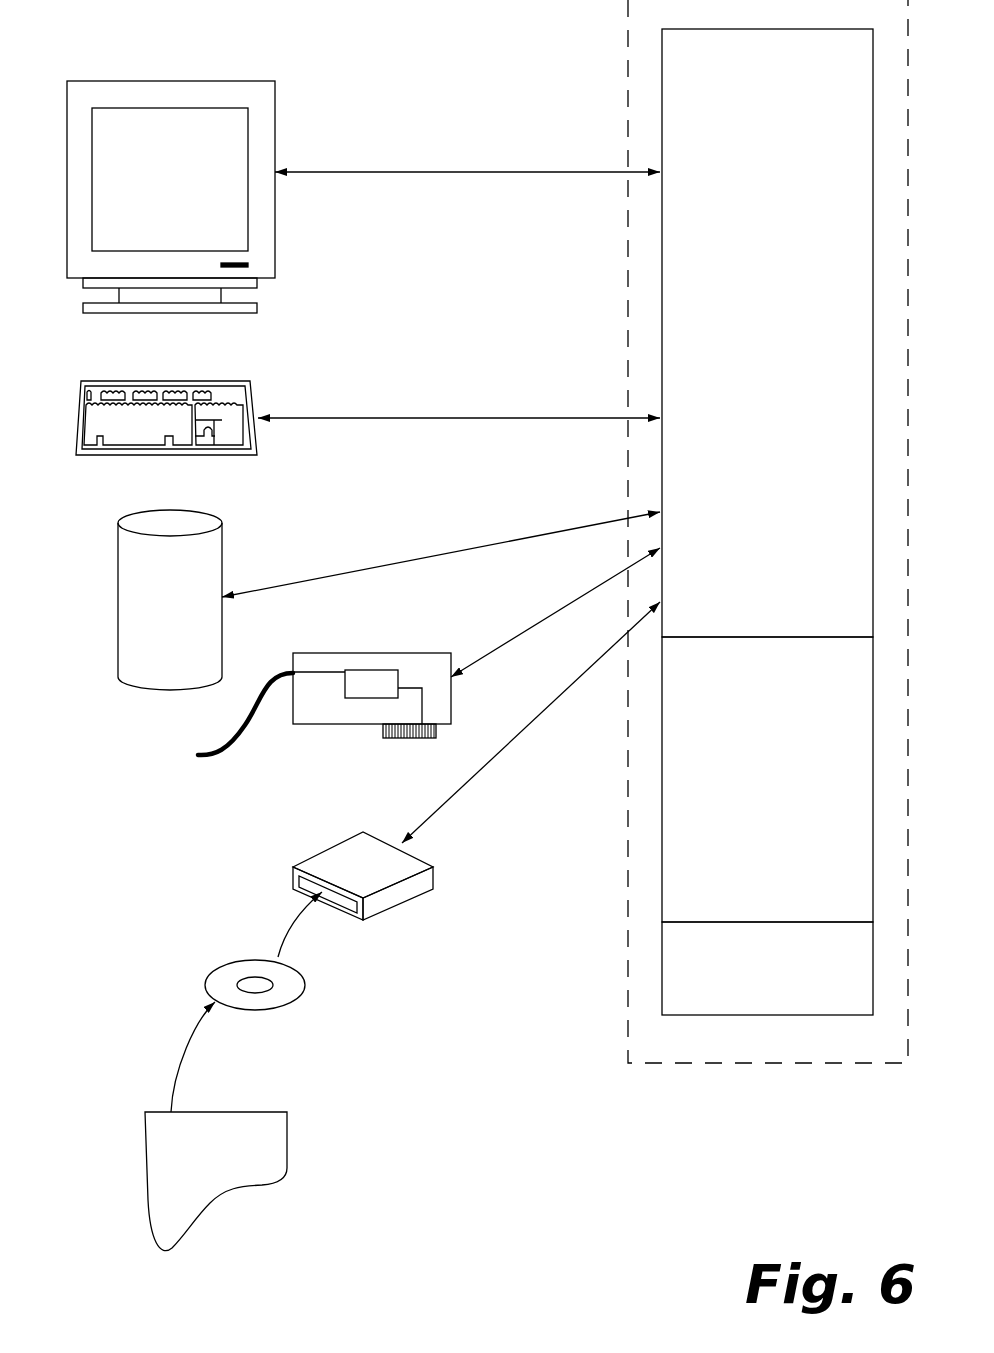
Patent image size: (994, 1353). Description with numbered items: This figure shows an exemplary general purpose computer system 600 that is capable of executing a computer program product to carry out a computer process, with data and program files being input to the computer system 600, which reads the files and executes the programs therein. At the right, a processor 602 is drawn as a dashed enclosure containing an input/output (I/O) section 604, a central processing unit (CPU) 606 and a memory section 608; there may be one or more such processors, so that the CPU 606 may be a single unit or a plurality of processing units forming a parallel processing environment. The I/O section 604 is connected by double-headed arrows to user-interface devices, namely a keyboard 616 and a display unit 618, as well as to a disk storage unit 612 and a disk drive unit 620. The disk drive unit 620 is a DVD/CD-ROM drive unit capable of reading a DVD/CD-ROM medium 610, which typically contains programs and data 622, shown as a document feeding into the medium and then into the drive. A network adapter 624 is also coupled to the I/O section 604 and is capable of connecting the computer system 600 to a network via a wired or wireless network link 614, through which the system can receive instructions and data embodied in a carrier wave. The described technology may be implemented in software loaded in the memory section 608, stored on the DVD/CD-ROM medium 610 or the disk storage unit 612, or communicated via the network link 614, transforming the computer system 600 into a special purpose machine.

The general purpose computer system 600 is at (585, 1157).
The processor 602 is at (625, 66).
The input/output (I/O) section 604 is at (748, 361).
The central processing unit (CPU) 606 is at (749, 804).
The memory section 608 is at (749, 993).
The DVD/CD-ROM medium 610 is at (222, 963).
The disk storage unit 612 is at (118, 545).
The network link 614 is at (223, 757).
The keyboard 616 is at (123, 380).
The display unit 618 is at (136, 82).
The disk drive unit 620 is at (345, 866).
The programs and data 622 is at (287, 1133).
The network adapter 624 is at (345, 725).